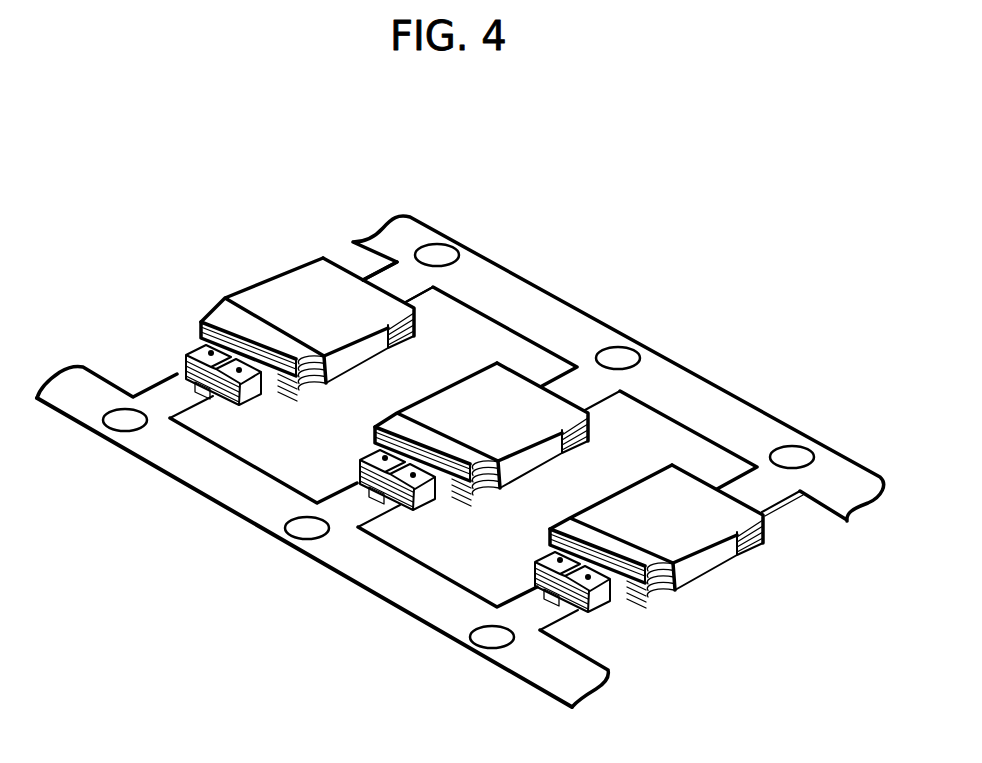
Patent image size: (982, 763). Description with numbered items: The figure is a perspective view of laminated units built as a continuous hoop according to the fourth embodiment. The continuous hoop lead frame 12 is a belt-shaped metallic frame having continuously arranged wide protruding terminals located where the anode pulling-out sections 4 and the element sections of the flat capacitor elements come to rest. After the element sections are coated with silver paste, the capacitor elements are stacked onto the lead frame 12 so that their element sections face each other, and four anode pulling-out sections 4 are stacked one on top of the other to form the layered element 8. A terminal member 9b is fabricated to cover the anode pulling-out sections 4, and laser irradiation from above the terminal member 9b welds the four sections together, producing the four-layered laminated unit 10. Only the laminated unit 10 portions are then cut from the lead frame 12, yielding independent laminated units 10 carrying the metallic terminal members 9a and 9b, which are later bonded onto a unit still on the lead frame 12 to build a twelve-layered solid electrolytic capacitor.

The anode pulling-out section 4 is at (573, 603).
The layered element 8 is at (263, 297).
The terminal member 9a is at (702, 568).
The terminal member 9b is at (602, 602).
The laminated unit 10 is at (408, 303).
The lead frame 12 is at (543, 300).